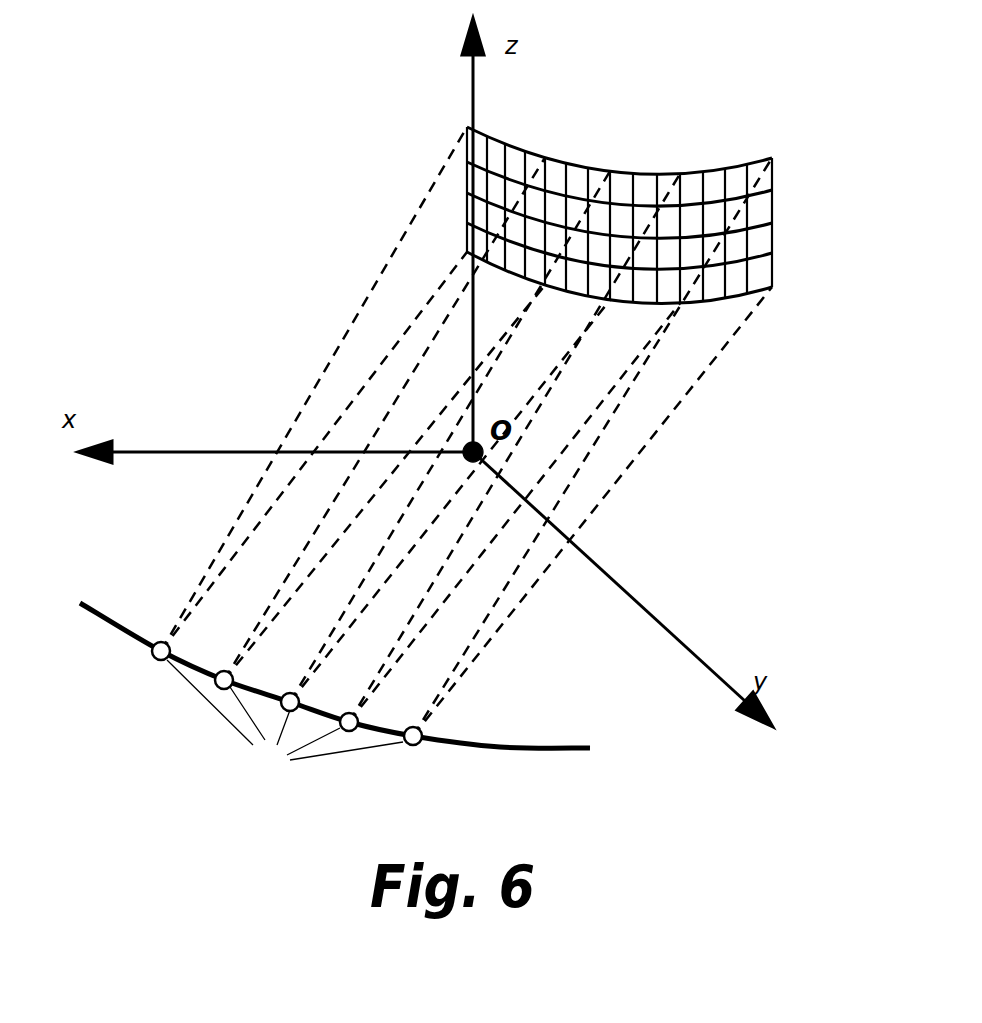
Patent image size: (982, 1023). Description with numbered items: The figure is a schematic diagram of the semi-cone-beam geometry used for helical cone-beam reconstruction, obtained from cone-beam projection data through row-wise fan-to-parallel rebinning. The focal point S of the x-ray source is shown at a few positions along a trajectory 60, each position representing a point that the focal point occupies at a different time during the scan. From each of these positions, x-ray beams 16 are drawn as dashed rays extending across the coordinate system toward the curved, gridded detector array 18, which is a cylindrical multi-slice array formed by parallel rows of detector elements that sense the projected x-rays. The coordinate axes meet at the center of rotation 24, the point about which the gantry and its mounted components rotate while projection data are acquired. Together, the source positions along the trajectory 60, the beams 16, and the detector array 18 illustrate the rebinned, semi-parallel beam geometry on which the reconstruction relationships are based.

The x-ray beams 16 is at (396, 247).
The detector array 18 is at (645, 170).
The center of rotation 24 is at (473, 452).
The trajectory 60 is at (538, 752).